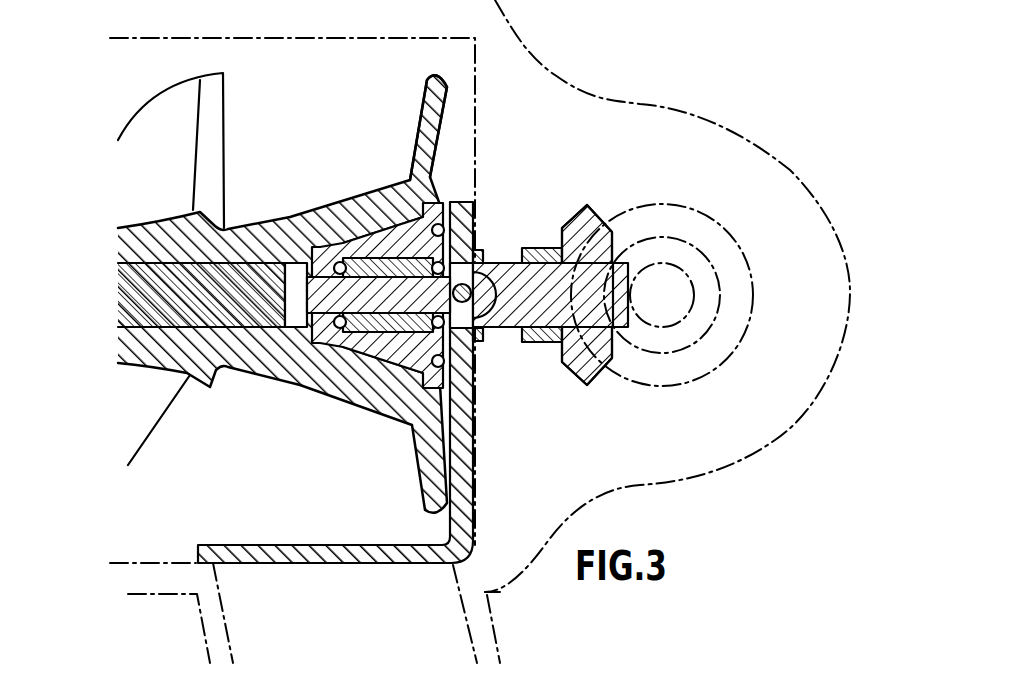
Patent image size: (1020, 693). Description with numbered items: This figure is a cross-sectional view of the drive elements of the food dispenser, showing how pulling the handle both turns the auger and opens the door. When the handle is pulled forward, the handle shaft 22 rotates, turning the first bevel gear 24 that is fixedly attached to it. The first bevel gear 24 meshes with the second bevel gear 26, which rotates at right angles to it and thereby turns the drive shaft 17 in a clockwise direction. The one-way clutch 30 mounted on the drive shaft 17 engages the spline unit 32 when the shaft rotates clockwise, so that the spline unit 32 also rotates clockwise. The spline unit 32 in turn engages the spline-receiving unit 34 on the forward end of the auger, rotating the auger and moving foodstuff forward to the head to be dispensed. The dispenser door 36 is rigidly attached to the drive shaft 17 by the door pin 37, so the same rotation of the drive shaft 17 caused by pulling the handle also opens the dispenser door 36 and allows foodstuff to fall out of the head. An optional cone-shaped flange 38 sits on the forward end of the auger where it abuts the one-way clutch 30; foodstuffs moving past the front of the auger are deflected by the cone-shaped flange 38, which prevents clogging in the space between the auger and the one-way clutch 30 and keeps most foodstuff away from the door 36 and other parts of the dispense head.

The drive shaft 17 is at (502, 317).
The handle shaft 22 is at (668, 296).
The first bevel gear 24 is at (688, 225).
The second bevel gear 26 is at (590, 204).
The one-way clutch 30 is at (380, 362).
The spline unit 32 is at (433, 197).
The spline-receiving unit 34 is at (392, 194).
The dispenser door 36 is at (475, 452).
The door pin 37 is at (492, 263).
The cone-shaped flange 38 is at (417, 137).